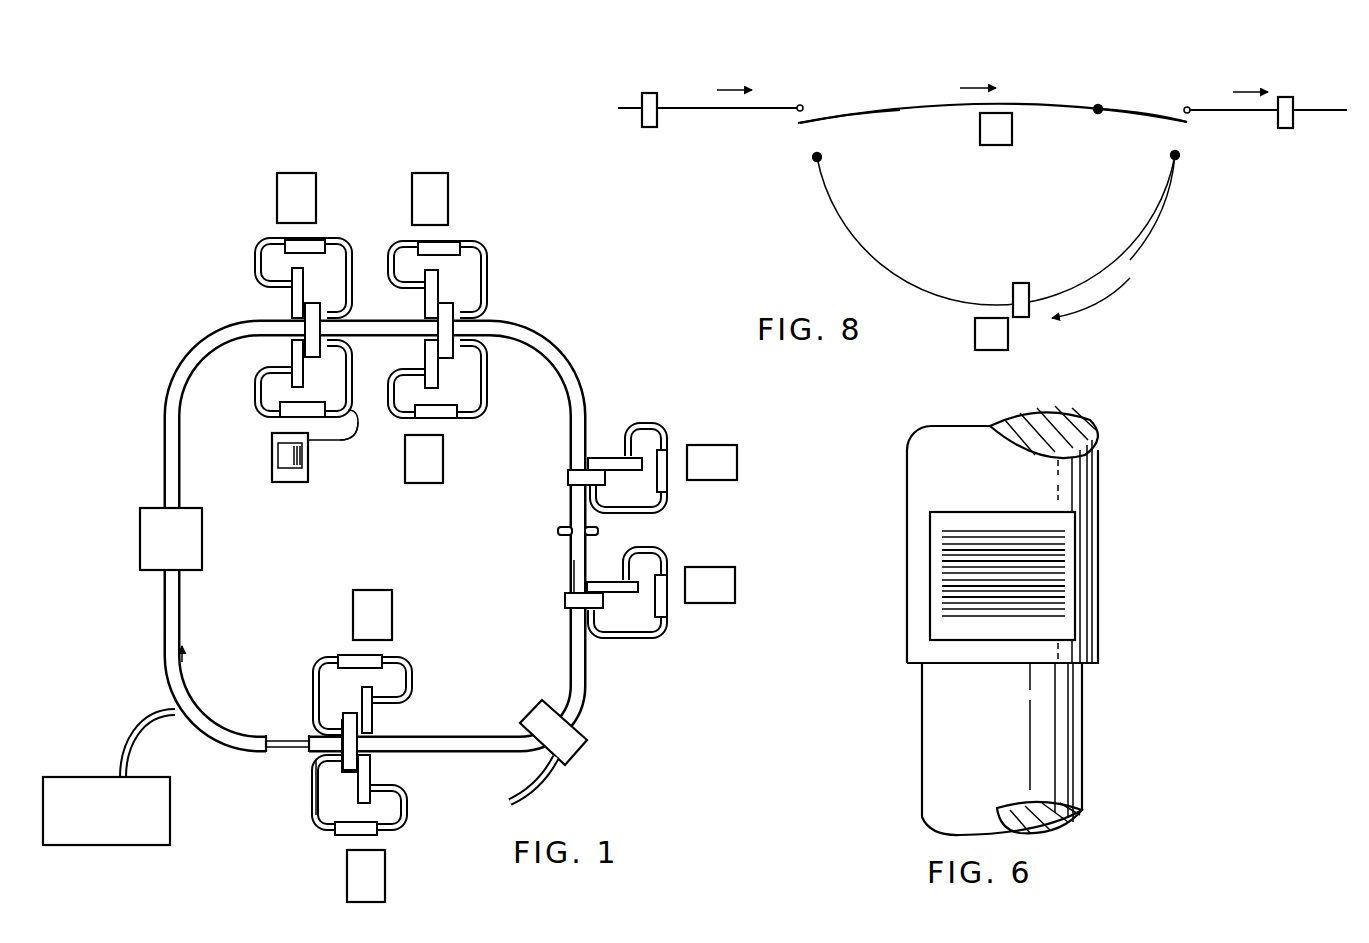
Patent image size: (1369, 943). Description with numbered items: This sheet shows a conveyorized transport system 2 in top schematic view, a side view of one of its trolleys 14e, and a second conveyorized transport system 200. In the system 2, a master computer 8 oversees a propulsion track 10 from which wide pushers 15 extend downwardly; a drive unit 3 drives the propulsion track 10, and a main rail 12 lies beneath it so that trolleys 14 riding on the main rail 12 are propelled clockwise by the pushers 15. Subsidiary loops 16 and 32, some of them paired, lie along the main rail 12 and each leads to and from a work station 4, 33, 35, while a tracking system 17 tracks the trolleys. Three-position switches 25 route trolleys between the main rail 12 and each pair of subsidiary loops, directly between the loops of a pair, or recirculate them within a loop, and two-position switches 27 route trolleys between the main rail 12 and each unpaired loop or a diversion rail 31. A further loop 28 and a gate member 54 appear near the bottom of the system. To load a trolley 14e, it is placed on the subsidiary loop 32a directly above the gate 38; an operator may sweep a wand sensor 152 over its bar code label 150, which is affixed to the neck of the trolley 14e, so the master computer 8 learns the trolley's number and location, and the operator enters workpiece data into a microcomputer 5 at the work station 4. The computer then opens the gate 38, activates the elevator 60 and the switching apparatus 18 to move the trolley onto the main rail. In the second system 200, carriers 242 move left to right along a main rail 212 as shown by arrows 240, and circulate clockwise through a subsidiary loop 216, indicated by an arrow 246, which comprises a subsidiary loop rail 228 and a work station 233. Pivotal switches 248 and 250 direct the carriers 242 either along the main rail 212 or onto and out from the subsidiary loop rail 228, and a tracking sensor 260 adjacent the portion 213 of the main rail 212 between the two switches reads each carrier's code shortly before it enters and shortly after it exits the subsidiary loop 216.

In FIG. 1, the conveyorized transport system 2 is at (581, 337).
In FIG. 1, the drive unit 3 is at (204, 520).
In FIG. 1, the work station 4 is at (270, 457).
In FIG. 1, the microcomputer 5 is at (285, 468).
In FIG. 1, the master computer 8 is at (171, 810).
In FIG. 1, the propulsion track 10 is at (575, 566).
In FIG. 1, the main rail 12 is at (290, 749).
In FIG. 1, the trolley 14 is at (565, 537).
In FIG. 1, the wide pusher 15 is at (566, 527).
In FIG. 1, the subsidiary loop 16 is at (321, 240).
In FIG. 1, the tracking system 17 is at (320, 459).
In FIG. 1, the switching apparatus 18 is at (348, 722).
In FIG. 1, the three-position switch 25 is at (290, 302).
In FIG. 1, the two-position switch 27 is at (602, 456).
In FIG. 1, the output loop 28 is at (313, 805).
In FIG. 1, the diversion rail 31 is at (532, 778).
In FIG. 1, the subsidiary loop 32 is at (487, 418).
In FIG. 1, the subsidiary loop 32a is at (257, 413).
In FIG. 1, the work station 33 is at (277, 176).
In FIG. 1, the work station 35 is at (432, 483).
In FIG. 1, the gate 38 is at (304, 403).
In FIG. 1, the gate 54 is at (372, 776).
In FIG. 1, the elevator 60 is at (373, 716).
In FIG. 1, the wand sensor 152 is at (366, 398).
In FIG. 8, the conveyorized transport system 200 is at (1065, 92).
In FIG. 8, the main rail 212 is at (731, 112).
In FIG. 8, the portion of the main rail 213 is at (900, 112).
In FIG. 8, the subsidiary loop 216 is at (822, 230).
In FIG. 8, the subsidiary loop rail 228 is at (1175, 190).
In FIG. 8, the work station 233 is at (1006, 350).
In FIG. 8, the arrow 240 is at (1010, 74).
In FIG. 8, the carrier 242 is at (649, 128).
In FIG. 8, the arrow 246 is at (1105, 298).
In FIG. 8, the pivotal switch 248 is at (848, 118).
In FIG. 8, the pivotal switch 250 is at (1140, 112).
In FIG. 8, the tracking sensor 260 is at (996, 145).
In FIG. 6, the trolley 14e is at (1098, 478).
In FIG. 6, the bar code label 150 is at (1079, 578).